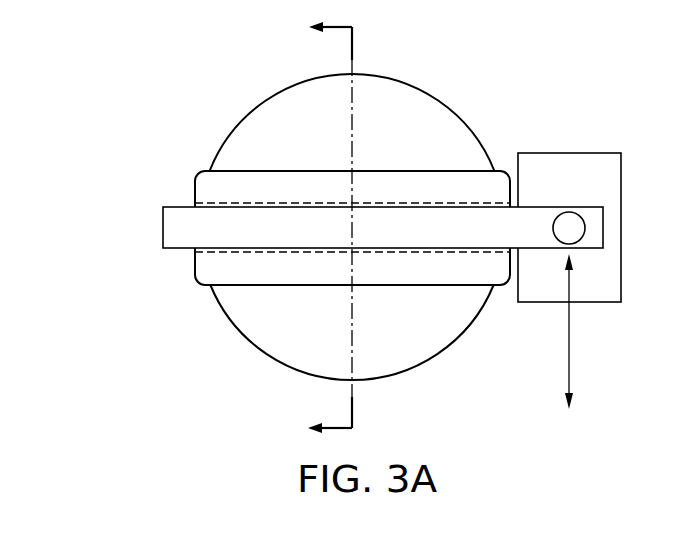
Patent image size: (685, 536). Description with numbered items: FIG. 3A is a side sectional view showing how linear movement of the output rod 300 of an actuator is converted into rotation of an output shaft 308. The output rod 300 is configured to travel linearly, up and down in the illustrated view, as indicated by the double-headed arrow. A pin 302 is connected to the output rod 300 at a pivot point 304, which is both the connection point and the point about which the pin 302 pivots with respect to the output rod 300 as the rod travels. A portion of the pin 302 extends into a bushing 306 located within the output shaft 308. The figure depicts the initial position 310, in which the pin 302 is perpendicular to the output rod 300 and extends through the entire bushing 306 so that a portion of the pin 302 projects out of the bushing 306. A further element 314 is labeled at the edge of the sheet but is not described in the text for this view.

The output rod 300 is at (540, 303).
The pin 302 is at (540, 207).
The pivot point 304 is at (585, 228).
The bushing 306 is at (210, 283).
The output shaft 308 is at (228, 138).
The initial position 310 is at (243, 224).
The housing 314 is at (626, 535).